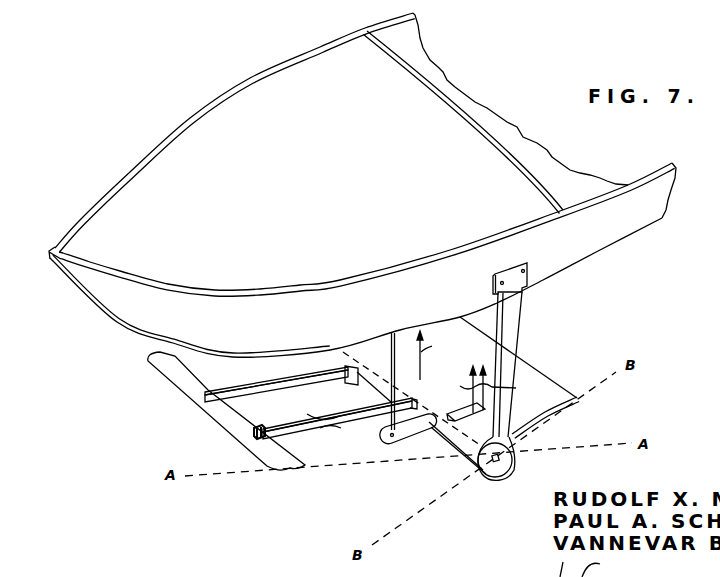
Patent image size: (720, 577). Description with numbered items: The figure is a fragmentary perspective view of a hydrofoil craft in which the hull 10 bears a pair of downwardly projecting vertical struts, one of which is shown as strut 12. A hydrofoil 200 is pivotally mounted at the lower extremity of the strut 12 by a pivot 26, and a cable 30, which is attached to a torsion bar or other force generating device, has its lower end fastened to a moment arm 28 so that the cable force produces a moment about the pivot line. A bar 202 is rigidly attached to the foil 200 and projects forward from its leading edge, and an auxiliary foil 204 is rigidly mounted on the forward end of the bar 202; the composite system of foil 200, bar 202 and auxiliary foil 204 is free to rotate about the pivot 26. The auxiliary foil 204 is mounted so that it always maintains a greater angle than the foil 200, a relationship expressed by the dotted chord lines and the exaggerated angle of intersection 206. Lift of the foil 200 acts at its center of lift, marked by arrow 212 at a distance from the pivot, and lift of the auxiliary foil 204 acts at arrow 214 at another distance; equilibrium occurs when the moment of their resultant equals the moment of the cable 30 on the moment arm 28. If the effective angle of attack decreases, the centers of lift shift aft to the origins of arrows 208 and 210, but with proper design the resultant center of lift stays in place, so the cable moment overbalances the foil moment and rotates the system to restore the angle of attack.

The hull 10 is at (123, 322).
The vertical strut 12 is at (510, 342).
The pivot 26 is at (490, 475).
The moment arm 28 is at (409, 444).
The cable 30 is at (398, 343).
The hydrofoil 200 is at (543, 377).
The bar 202 is at (262, 390).
The auxiliary foil 204 is at (262, 460).
The angle of intersection 206 is at (544, 443).
The arrow 208 is at (502, 392).
The arrow 210 is at (262, 437).
The arrow 212 is at (457, 398).
The arrow 214 is at (255, 435).